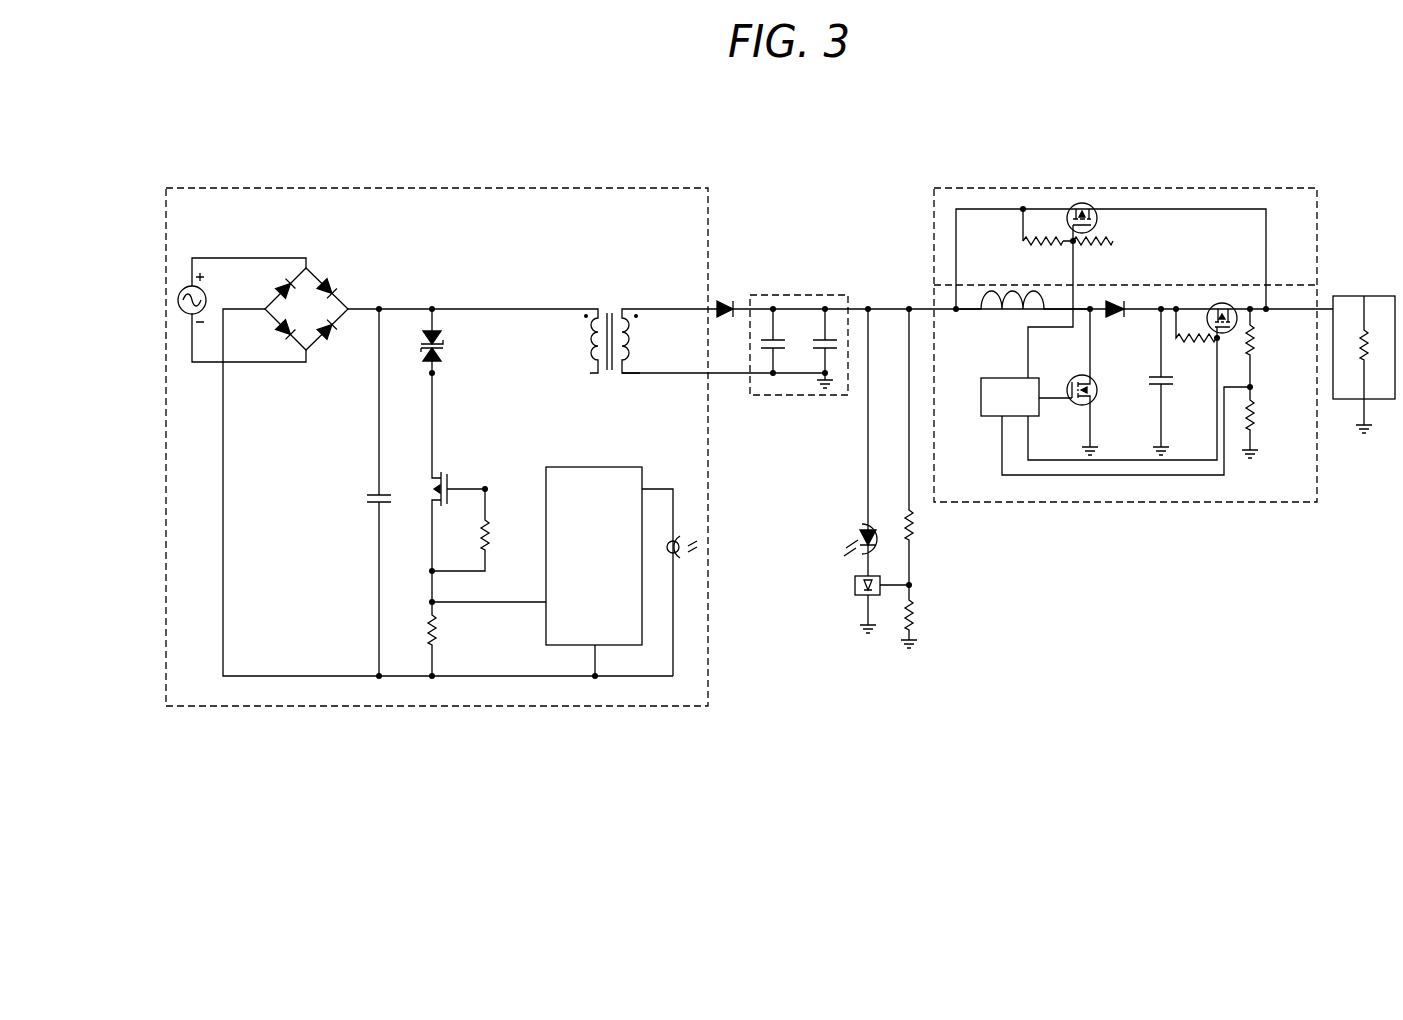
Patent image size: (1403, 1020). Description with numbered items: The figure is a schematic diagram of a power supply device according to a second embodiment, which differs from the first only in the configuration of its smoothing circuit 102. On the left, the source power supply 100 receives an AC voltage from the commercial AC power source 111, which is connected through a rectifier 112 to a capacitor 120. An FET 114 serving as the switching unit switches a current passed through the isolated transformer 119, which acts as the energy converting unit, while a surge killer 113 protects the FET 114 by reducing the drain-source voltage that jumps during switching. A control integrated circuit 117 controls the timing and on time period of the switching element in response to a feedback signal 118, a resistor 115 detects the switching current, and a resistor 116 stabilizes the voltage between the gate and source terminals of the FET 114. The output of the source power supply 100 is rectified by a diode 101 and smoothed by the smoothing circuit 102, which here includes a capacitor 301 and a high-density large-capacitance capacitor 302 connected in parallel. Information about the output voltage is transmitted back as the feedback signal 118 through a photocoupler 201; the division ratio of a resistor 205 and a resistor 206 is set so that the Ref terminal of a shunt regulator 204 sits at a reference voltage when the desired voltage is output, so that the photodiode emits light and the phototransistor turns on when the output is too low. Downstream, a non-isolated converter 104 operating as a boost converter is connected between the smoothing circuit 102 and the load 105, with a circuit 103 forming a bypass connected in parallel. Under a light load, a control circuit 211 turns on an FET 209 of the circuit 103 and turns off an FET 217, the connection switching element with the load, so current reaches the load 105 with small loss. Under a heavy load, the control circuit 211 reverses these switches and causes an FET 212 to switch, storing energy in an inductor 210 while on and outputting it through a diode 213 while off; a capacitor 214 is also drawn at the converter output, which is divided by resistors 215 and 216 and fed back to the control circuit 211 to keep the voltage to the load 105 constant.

The source power supply 100 is at (478, 189).
The diode 101 is at (727, 300).
The smoothing circuit 102 is at (803, 298).
The circuit 103 is at (1175, 189).
The non-isolated converter 104 is at (1080, 504).
The load 105 is at (1362, 296).
The commercial AC power source 111 is at (207, 297).
The rectifier 112 is at (330, 290).
The surge killer 113 is at (444, 356).
The FET 114 is at (455, 482).
The resistor 115 is at (440, 636).
The resistor 116 is at (487, 556).
The control integrated circuit 117 is at (589, 467).
The feedback signal 118 is at (666, 489).
The isolated transformer 119 is at (618, 382).
The capacitor 120 is at (376, 491).
The photocoupler 201 is at (686, 538).
The shunt regulator 204 is at (855, 585).
The resistor 205 is at (914, 528).
The resistor 206 is at (914, 618).
The FET 209 is at (1090, 205).
The inductor 210 is at (1000, 320).
The control circuit 211 is at (985, 420).
The FET 212 is at (1097, 392).
The diode 213 is at (1116, 300).
The capacitor 214 is at (1150, 398).
The resistor 215 is at (1255, 342).
The resistor 216 is at (1255, 415).
The FET 217 is at (1224, 302).
The capacitor 301 is at (770, 352).
The high-density large-capacitance capacitor 302 is at (820, 352).